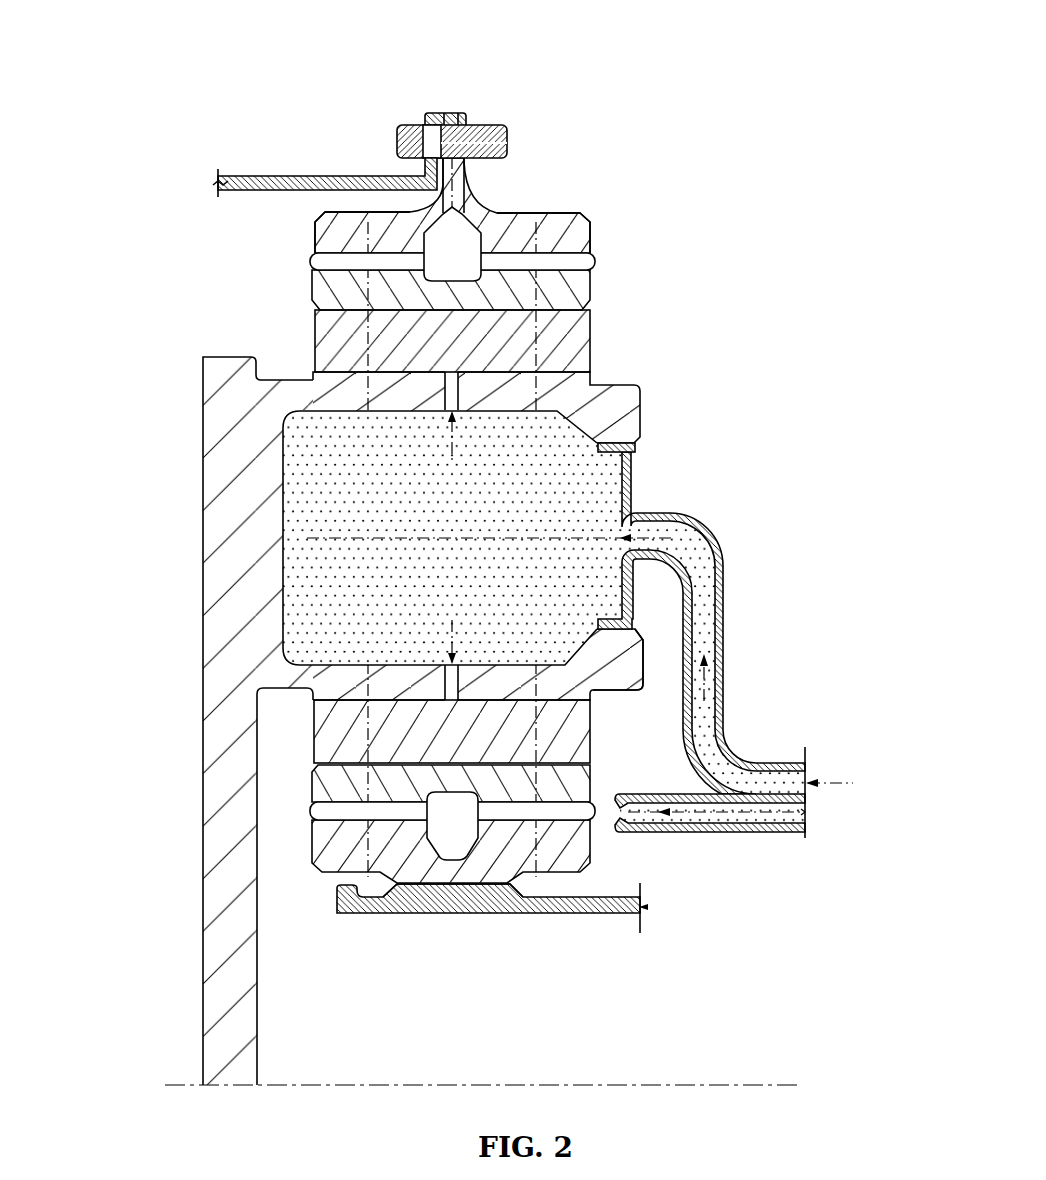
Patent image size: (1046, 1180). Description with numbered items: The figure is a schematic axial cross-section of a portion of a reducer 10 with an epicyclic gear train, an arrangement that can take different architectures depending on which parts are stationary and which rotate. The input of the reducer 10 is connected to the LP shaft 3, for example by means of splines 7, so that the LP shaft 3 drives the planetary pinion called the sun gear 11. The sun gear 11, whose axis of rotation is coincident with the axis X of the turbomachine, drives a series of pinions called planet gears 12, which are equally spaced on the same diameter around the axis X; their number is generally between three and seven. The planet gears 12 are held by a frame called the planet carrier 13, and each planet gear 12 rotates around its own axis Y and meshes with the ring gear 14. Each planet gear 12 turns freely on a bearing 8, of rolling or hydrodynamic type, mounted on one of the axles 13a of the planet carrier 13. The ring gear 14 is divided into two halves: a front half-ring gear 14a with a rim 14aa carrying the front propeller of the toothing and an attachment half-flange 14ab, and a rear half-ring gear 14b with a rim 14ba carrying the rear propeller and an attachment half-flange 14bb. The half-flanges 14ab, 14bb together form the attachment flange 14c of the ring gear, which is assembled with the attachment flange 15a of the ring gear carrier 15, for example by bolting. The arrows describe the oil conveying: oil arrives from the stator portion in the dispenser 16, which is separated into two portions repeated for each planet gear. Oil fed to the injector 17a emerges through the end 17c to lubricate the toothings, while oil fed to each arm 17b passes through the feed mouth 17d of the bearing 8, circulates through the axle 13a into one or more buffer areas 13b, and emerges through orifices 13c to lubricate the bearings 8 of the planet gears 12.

The LP shaft 3 is at (593, 913).
The splines 7 is at (418, 890).
The bearing 8 is at (585, 344).
The reducer 10 is at (755, 314).
The sun gear 11 is at (318, 834).
The planet gear 12 is at (318, 793).
The planet carrier 13 is at (494, 530).
The axle 13a is at (630, 667).
The buffer area 13b is at (452, 538).
The orifice 13c is at (458, 388).
The ring gear 14 is at (467, 160).
The front half-ring gear 14a is at (327, 232).
The rear half-ring gear 14b is at (575, 238).
The rim 14aa is at (340, 230).
The rim 14ba is at (522, 227).
The attachment half-flange 14ab is at (444, 114).
The attachment half-flange 14bb is at (457, 115).
The attachment flange 14c is at (535, 47).
The ring gear carrier 15 is at (267, 176).
The attachment flange 15a is at (427, 115).
The dispenser 16 is at (802, 718).
The injector 17a is at (742, 833).
The arm 17b is at (726, 604).
The end 17c is at (616, 836).
The feed mouth 17d is at (633, 462).
The axis X is at (727, 1080).
The axis Y is at (603, 535).